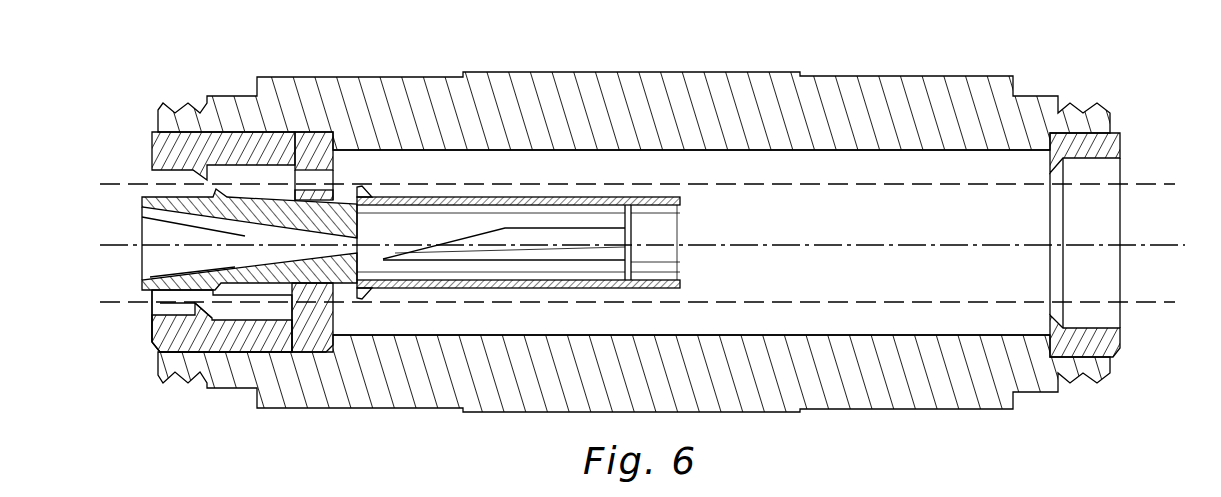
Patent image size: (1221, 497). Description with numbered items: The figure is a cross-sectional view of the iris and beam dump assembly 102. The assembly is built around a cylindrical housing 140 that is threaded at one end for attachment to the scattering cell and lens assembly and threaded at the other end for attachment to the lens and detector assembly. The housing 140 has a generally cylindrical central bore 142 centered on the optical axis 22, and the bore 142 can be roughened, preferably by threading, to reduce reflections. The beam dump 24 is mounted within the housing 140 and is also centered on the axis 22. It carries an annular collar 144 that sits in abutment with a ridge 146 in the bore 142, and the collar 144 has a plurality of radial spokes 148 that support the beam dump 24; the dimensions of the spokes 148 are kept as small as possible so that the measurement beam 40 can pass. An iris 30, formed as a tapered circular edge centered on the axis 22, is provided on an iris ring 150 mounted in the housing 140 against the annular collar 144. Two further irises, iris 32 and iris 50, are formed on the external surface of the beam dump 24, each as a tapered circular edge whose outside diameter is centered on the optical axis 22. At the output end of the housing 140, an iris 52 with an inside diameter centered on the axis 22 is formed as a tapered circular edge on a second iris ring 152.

The iris and beam dump assembly 102 is at (735, 58).
The optical axis 22 is at (936, 247).
The measurement beam 40 is at (765, 188).
The cylindrical housing 140 is at (623, 75).
The central bore 142 is at (904, 156).
The annular collar 144 is at (326, 130).
The ridge 146 is at (325, 352).
The radial spokes 148 is at (280, 335).
The iris ring 150 is at (152, 336).
The iris 30 is at (193, 305).
The iris 32 is at (216, 292).
The beam dump 24 is at (515, 186).
The iris 50 is at (366, 291).
The iris 52 is at (1052, 318).
The iris ring 152 is at (1122, 351).